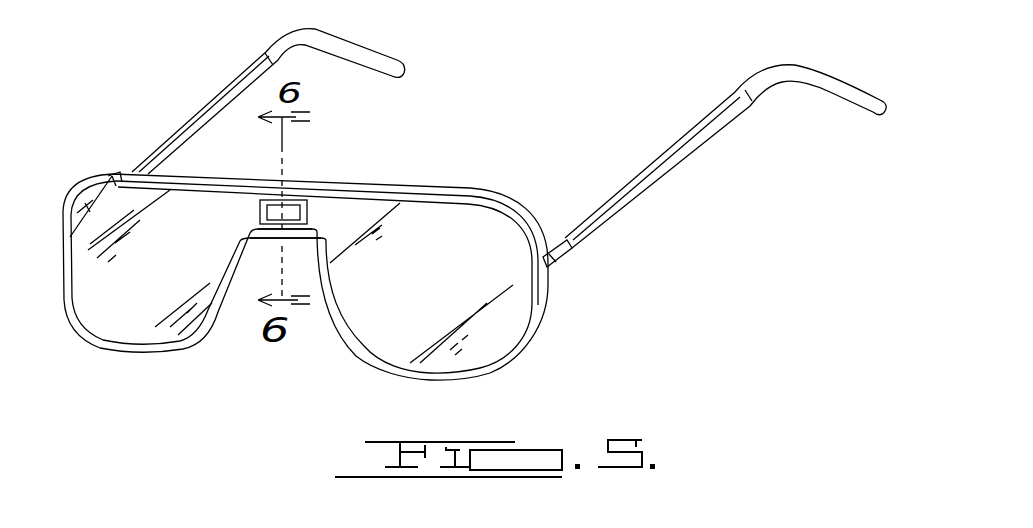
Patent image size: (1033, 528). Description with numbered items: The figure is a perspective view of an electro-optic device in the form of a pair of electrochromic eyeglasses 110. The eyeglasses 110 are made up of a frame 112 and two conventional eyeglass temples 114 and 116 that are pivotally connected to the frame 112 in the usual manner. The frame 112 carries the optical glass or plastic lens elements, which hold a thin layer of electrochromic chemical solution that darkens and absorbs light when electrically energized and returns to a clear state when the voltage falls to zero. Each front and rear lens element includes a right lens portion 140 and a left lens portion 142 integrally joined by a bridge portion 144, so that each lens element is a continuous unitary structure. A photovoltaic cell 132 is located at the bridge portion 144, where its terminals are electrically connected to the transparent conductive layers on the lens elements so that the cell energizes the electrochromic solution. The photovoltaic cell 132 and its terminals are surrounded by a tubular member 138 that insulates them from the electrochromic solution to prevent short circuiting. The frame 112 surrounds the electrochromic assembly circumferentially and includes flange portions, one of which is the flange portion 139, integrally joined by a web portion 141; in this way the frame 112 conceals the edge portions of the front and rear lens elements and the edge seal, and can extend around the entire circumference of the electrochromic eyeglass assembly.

The eyeglasses 110 is at (125, 345).
The frame 112 is at (352, 364).
The eyeglass temple 114 is at (213, 98).
The eyeglass temple 116 is at (663, 173).
The photovoltaic cell 132 is at (273, 212).
The tubular member 138 is at (260, 211).
The flange portion 139 is at (116, 186).
The right lens portion 140 is at (103, 287).
The web portion 141 is at (467, 192).
The left lens portion 142 is at (513, 310).
The bridge portion 144 is at (313, 216).